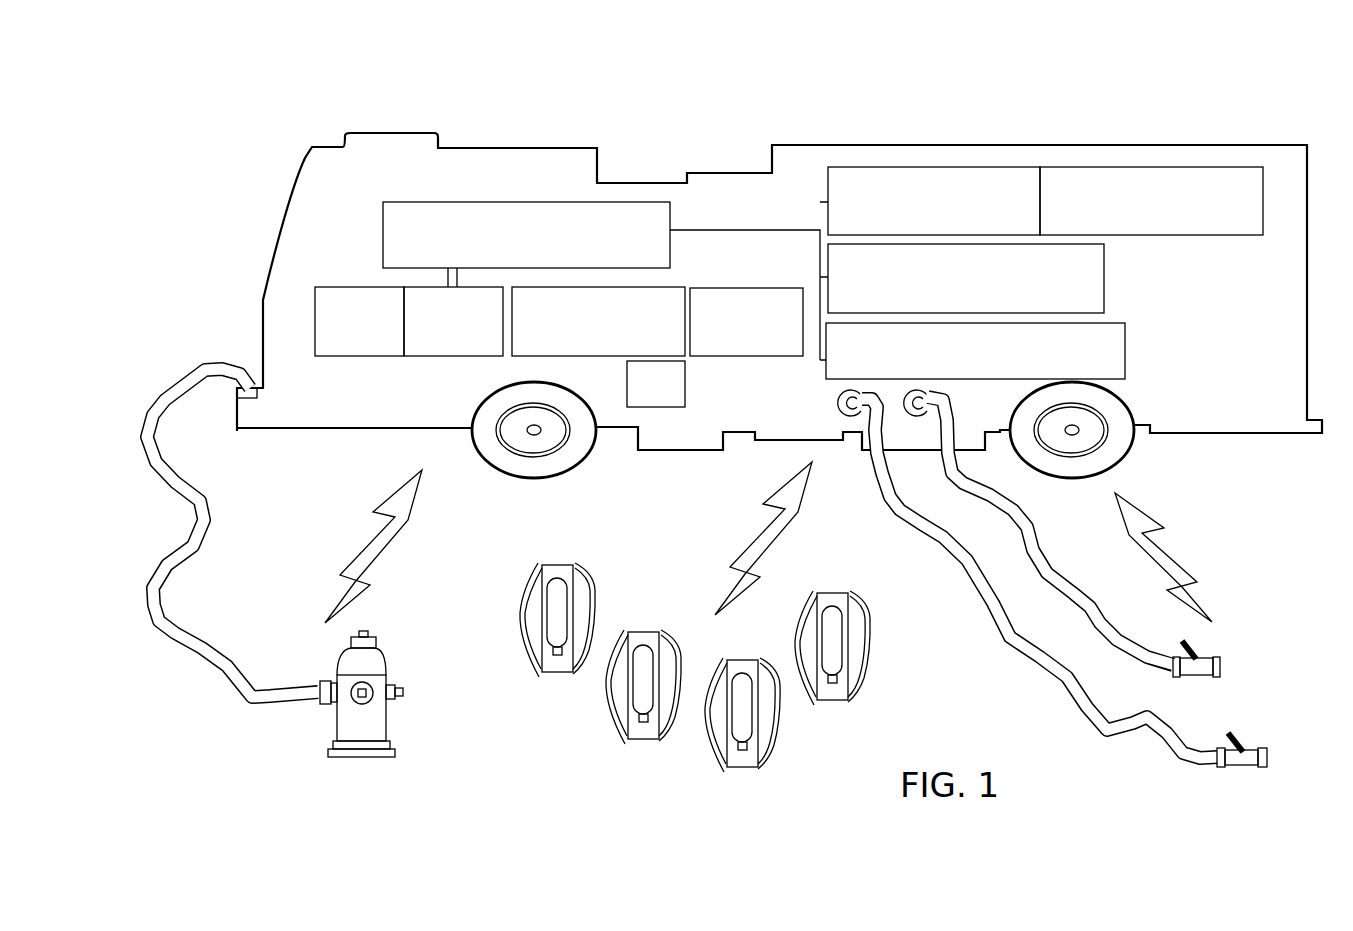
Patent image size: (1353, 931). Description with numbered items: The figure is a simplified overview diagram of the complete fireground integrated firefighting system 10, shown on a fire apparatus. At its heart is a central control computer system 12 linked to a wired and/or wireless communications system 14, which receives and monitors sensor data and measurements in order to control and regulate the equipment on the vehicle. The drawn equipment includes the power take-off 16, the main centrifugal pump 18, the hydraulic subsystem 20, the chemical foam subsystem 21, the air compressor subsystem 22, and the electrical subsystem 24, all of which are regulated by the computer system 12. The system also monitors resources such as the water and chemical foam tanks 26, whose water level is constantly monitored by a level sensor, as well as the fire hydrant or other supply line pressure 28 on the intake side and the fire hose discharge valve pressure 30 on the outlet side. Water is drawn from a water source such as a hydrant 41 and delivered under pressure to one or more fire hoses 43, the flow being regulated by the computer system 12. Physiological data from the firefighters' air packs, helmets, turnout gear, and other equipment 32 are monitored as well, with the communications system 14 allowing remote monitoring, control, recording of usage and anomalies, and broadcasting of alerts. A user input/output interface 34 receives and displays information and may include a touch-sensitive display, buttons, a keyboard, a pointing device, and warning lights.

The complete fireground integrated firefighting system 10 is at (970, 82).
The central control computer system 12 is at (567, 357).
The communications system 14 is at (732, 287).
The power take-off (PTO) 16 is at (367, 356).
The main centrifugal pump 18 is at (455, 356).
The hydraulic subsystem 20 is at (828, 180).
The chemical foam subsystem 21 is at (1207, 235).
The air compressor subsystem 22 is at (1105, 288).
The electrical subsystem 24 is at (1127, 360).
The water and chemical foam tanks 26 is at (383, 254).
The fire hydrant or other supply line pressure 28 is at (225, 352).
The fire hose discharge valve pressure 30 is at (1256, 682).
The firefighter air packs, helmets, turnout gear, and other equipment 32 is at (662, 772).
The user input/output interface (I/O) 34 is at (685, 383).
The hydrant 41 is at (382, 664).
The fire hoses 43 is at (980, 636).